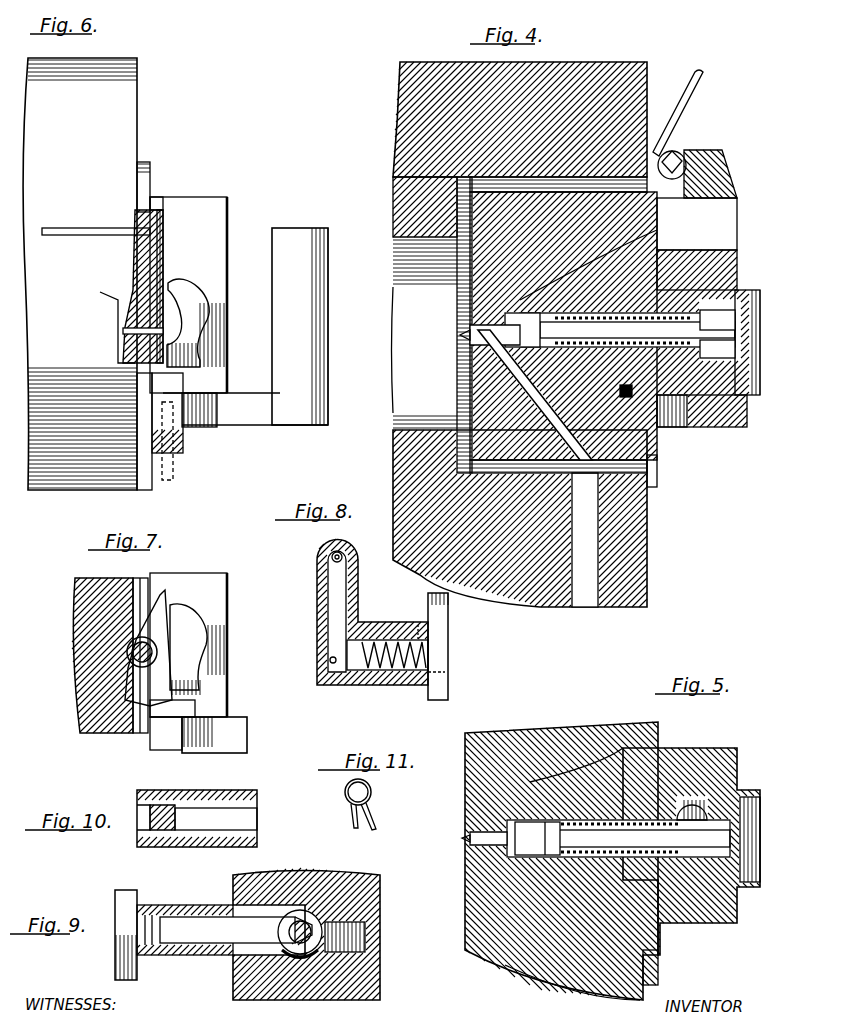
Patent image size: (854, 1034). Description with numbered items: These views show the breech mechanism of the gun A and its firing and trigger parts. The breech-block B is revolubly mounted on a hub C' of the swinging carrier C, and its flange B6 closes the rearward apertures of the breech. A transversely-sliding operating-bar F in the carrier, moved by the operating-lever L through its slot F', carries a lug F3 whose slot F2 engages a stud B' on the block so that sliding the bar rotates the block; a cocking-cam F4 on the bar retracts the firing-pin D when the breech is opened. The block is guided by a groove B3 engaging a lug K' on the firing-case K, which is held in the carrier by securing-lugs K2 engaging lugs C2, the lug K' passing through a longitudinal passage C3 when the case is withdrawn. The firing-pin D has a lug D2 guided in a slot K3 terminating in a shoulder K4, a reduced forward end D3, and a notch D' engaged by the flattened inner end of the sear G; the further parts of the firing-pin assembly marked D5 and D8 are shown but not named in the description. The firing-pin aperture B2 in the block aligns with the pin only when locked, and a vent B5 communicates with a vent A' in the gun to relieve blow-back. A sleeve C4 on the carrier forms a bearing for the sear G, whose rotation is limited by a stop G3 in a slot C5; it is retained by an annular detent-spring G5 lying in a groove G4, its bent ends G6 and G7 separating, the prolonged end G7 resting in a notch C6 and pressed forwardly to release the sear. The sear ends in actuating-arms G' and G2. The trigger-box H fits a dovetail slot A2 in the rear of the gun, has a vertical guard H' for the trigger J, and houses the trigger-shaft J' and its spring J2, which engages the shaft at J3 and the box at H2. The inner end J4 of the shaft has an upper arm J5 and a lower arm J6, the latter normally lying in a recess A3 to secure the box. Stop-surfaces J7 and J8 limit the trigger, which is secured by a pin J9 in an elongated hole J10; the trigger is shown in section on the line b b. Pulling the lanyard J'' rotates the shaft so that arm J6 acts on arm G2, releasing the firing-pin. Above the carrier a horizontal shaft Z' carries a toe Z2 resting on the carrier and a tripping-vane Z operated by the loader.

In FIG. 6, the gun A is at (80, 274).
In FIG. 4, the gun A is at (498, 237).
In FIG. 7, the gun A is at (95, 642).
In FIG. 5, the gun A is at (634, 984).
In FIG. 4, the vent in the gun A' is at (541, 518).
In FIG. 6, the dovetail slot A2 is at (123, 355).
In FIG. 7, the dovetail slot A2 is at (128, 638).
In FIG. 7, the recess in the gun A3 is at (118, 733).
In FIG. 4, the breech-block B is at (563, 326).
In FIG. 5, the breech-block B is at (561, 861).
In FIG. 6, the stud B' is at (120, 431).
In FIG. 4, the firing-pin aperture B2 is at (470, 335).
In FIG. 5, the firing-pin aperture B2 is at (470, 838).
In FIG. 5, the guide-groove B3 is at (658, 935).
In FIG. 4, the vent in the breech-block B5 is at (500, 380).
In FIG. 6, the flange B6 is at (146, 162).
In FIG. 4, the flange B6 is at (657, 475).
In FIG. 5, the flange B6 is at (658, 965).
In FIG. 6, the swinging carrier C is at (215, 290).
In FIG. 4, the swinging carrier C is at (715, 224).
In FIG. 7, the swinging carrier C is at (199, 645).
In FIG. 8, the swinging carrier C is at (420, 620).
In FIG. 5, the swinging carrier C is at (691, 843).
In FIG. 9, the swinging carrier C is at (306, 927).
In FIG. 4, the hub C' is at (588, 265).
In FIG. 5, the hub C' is at (576, 739).
In FIG. 5, the carrier lugs C2 is at (740, 900).
In FIG. 9, the longitudinal passage C3 is at (355, 945).
In FIG. 6, the sleeve C4 is at (210, 305).
In FIG. 7, the sleeve C4 is at (210, 632).
In FIG. 10, the sleeve C4 is at (200, 847).
In FIG. 9, the sleeve C4 is at (205, 905).
In FIG. 10, the slot in the sleeve C5 is at (140, 810).
In FIG. 6, the notch C6 is at (160, 200).
In FIG. 10, the notch C6 is at (165, 835).
In FIG. 4, the firing-pin D is at (627, 330).
In FIG. 5, the firing-pin D is at (618, 838).
In FIG. 9, the firing-pin D is at (236, 969).
In FIG. 4, the notch in the firing-pin D' is at (743, 323).
In FIG. 4, the firing-pin lug D2 is at (735, 350).
In FIG. 4, the forward end of the firing-pin D3 is at (525, 318).
In FIG. 4, the firing pin spring seat D5 is at (650, 390).
In FIG. 5, the firing pin collar D8 is at (530, 832).
In FIG. 4, the operating-bar F is at (682, 424).
In FIG. 6, the slot in the operating-bar F' is at (212, 420).
In FIG. 7, the slot in the operating-bar F' is at (201, 698).
In FIG. 6, the slot in the lug F2 is at (167, 449).
In FIG. 6, the lug on the operating-bar F3 is at (170, 450).
In FIG. 7, the lug on the operating-bar F3 is at (168, 750).
In FIG. 4, the cocking-cam F4 is at (747, 420).
In FIG. 4, the sear G is at (707, 268).
In FIG. 9, the sear G is at (216, 969).
In FIG. 6, the upper actuating-arm of the sear G' is at (210, 302).
In FIG. 7, the upper actuating-arm of the sear G' is at (198, 614).
In FIG. 9, the upper actuating-arm of the sear G' is at (120, 878).
In FIG. 6, the lower actuating-arm of the sear G2 is at (185, 368).
In FIG. 7, the lower actuating-arm of the sear G2 is at (200, 697).
In FIG. 9, the lower actuating-arm of the sear G2 is at (115, 970).
In FIG. 9, the stop G3 is at (145, 955).
In FIG. 9, the circumferential groove G4 is at (150, 915).
In FIG. 11, the annular detent-spring G5 is at (347, 785).
In FIG. 11, the bent end of the detent-spring G6 is at (352, 818).
In FIG. 9, the bent end of the detent-spring G6 is at (158, 955).
In FIG. 6, the prolonged end of the detent-spring G7 is at (198, 352).
In FIG. 7, the prolonged end of the detent-spring G7 is at (195, 672).
In FIG. 11, the prolonged end of the detent-spring G7 is at (374, 812).
In FIG. 6, the trigger-box H is at (108, 323).
In FIG. 7, the trigger-box H is at (126, 639).
In FIG. 8, the trigger-box H is at (369, 611).
In FIG. 6, the vertical guard H' is at (182, 285).
In FIG. 8, the vertical guard H' is at (359, 612).
In FIG. 8, the spring engagement on the trigger-box H2 is at (370, 685).
In FIG. 6, the trigger J is at (130, 286).
In FIG. 8, the trigger J is at (316, 611).
In FIG. 7, the trigger-shaft J' is at (79, 699).
In FIG. 8, the trigger-shaft J' is at (393, 609).
In FIG. 6, the lanyard J'' is at (96, 215).
In FIG. 7, the trigger-shaft spring J2 is at (127, 652).
In FIG. 8, the trigger-shaft spring J2 is at (395, 686).
In FIG. 8, the spring engagement on the shaft J3 is at (448, 672).
In FIG. 8, the inner end of the trigger-shaft J4 is at (428, 655).
In FIG. 6, the upper arm of the trigger-shaft J5 is at (168, 290).
In FIG. 7, the upper arm of the trigger-shaft J5 is at (142, 640).
In FIG. 8, the upper arm of the trigger-shaft J5 is at (448, 603).
In FIG. 6, the lower arm of the trigger-shaft J6 is at (148, 370).
In FIG. 7, the lower arm of the trigger-shaft J6 is at (125, 700).
In FIG. 8, the lower arm of the trigger-shaft J6 is at (446, 700).
In FIG. 6, the stop-surface of the trigger J7 is at (135, 358).
In FIG. 6, the stop-surface of the trigger J8 is at (178, 420).
In FIG. 8, the stop-surface of the trigger J8 is at (330, 680).
In FIG. 6, the pin J9 is at (205, 322).
In FIG. 8, the pin J9 is at (330, 660).
In FIG. 6, the elongated hole J10 is at (123, 330).
In FIG. 4, the firing-case K is at (757, 342).
In FIG. 5, the firing-case K is at (755, 823).
In FIG. 9, the firing-case K is at (301, 966).
In FIG. 5, the lug on the firing-case K' is at (606, 907).
In FIG. 9, the lug on the firing-case K' is at (330, 984).
In FIG. 5, the securing-lugs K2 is at (720, 923).
In FIG. 4, the longitudinal slot K3 is at (745, 388).
In FIG. 4, the shoulder K4 is at (622, 392).
In FIG. 6, the operating-lever L is at (285, 425).
In FIG. 4, the operating-lever L is at (728, 427).
In FIG. 7, the operating-lever L is at (247, 732).
In FIG. 8, the section line b b is at (337, 552).
In FIG. 4, the tripping-vane Z is at (688, 113).
In FIG. 4, the horizontal shaft Z' is at (700, 153).
In FIG. 4, the toe Z2 is at (710, 180).